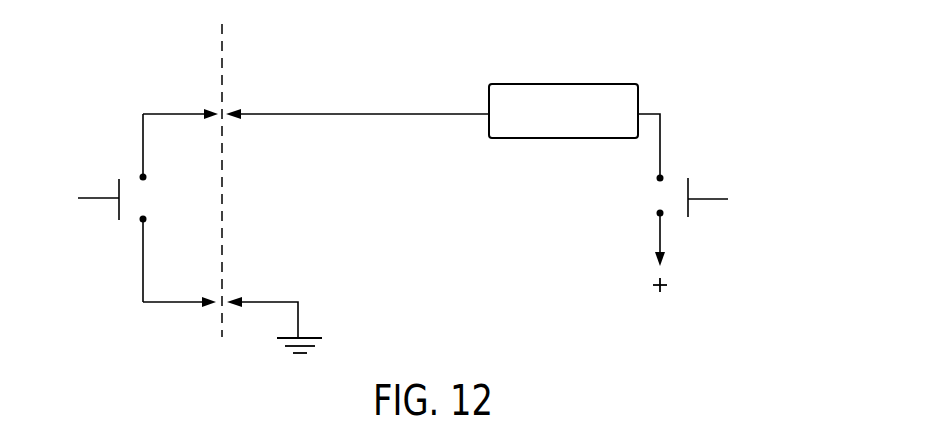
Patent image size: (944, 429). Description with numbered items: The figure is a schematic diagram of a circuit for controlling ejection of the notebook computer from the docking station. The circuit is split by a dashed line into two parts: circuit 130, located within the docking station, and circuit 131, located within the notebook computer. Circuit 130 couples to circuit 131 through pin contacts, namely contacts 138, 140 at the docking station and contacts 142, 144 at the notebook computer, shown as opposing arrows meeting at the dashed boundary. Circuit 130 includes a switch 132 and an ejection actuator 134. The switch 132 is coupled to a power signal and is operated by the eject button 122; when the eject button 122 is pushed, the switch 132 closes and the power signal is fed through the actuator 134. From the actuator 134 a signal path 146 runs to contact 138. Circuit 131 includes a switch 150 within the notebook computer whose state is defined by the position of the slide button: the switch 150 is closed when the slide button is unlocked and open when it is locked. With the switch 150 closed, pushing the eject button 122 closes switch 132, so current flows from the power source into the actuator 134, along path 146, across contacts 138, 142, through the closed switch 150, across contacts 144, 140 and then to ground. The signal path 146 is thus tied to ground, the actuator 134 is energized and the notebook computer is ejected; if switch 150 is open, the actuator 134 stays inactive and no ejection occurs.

The circuit 131 is at (183, 53).
The circuit 130 is at (295, 53).
The contact 142 is at (212, 110).
The contact 138 is at (242, 110).
The signal path 146 is at (288, 116).
The ejection actuator 134 is at (614, 84).
The switch 150 is at (100, 197).
The switch 132 is at (690, 197).
The eject button 122 is at (783, 222).
The contact 144 is at (212, 298).
The contact 140 is at (270, 300).